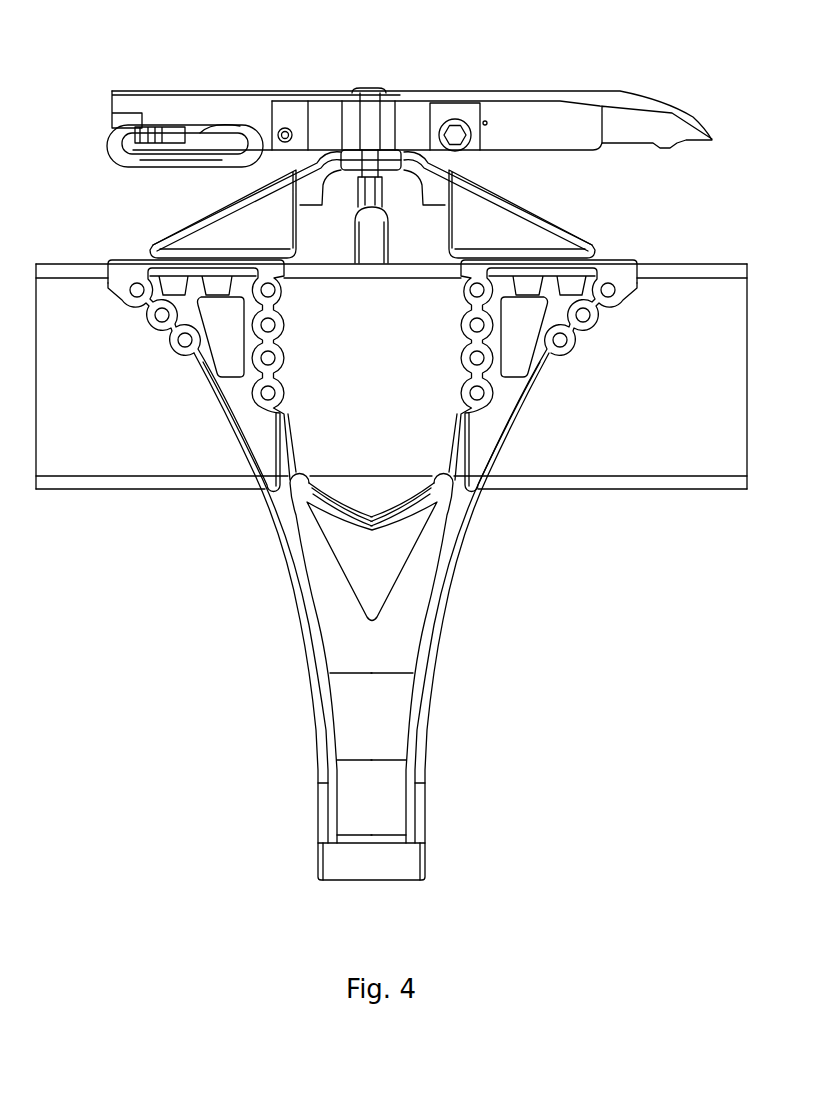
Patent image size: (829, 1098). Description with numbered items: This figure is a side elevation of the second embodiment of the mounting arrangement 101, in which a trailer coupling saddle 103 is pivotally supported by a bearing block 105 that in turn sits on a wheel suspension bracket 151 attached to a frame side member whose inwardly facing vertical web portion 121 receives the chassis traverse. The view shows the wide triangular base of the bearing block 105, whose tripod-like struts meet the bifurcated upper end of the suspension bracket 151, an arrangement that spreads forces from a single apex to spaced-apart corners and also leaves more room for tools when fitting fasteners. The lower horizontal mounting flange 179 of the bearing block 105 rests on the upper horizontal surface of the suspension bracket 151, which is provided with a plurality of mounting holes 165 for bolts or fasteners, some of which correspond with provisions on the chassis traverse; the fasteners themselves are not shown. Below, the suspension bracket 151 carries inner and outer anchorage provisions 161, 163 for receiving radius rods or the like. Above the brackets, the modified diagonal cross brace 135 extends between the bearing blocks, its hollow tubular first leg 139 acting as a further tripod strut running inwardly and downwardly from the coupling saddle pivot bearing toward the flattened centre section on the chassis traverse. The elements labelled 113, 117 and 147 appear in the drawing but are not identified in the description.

The mounting arrangement 101 is at (500, 606).
The coupling saddle 103 is at (535, 103).
The left bearing block 105 is at (548, 237).
The upper edge of plate 113 is at (704, 264).
The lower edge of plate 117 is at (712, 490).
The inwardly facing vertical web portion 121 is at (697, 418).
The diagonal cross brace 135 is at (336, 234).
The first leg 139 is at (374, 240).
The locking lever 147 is at (110, 150).
The left wheel suspension bracket 151 is at (370, 657).
The inner anchorage provision 161 is at (318, 867).
The outer anchorage provision 163 is at (371, 861).
The mounting holes 165 is at (172, 342).
The lower horizontal mounting flange 179 is at (150, 250).